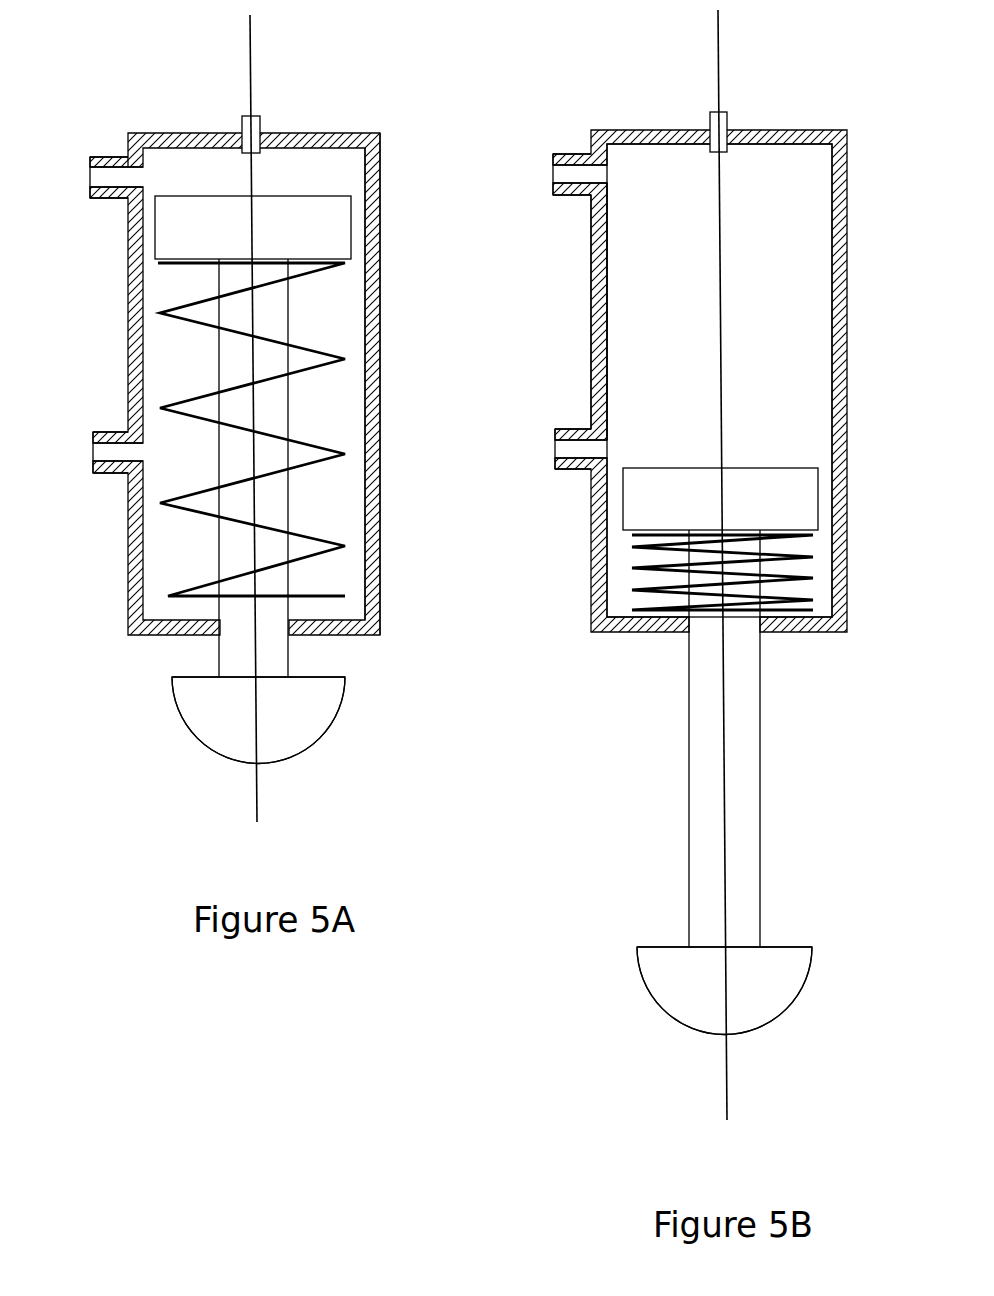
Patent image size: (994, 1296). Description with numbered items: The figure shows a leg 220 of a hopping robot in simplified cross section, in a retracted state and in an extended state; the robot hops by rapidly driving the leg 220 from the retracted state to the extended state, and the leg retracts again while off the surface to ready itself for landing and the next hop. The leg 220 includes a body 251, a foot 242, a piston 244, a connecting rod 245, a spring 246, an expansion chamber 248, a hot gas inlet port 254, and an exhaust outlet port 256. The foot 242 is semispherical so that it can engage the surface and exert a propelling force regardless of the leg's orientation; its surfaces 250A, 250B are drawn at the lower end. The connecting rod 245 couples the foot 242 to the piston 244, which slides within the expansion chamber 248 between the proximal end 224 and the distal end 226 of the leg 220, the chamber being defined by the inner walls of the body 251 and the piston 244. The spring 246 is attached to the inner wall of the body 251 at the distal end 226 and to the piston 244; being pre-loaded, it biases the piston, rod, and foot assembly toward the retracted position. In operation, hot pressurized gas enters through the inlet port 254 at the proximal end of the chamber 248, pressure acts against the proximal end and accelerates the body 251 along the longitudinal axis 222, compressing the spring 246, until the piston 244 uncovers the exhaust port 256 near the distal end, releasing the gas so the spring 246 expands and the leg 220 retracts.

In FIG. 5A, the leg 220 is at (266, 367).
In FIG. 5B, the leg 220 is at (658, 342).
In FIG. 5A, the longitudinal axis 222 is at (250, 62).
In FIG. 5B, the longitudinal axis 222 is at (718, 59).
In FIG. 5A, the proximal end 224 is at (380, 155).
In FIG. 5B, the proximal end 224 is at (608, 98).
In FIG. 5A, the distal end 226 is at (311, 536).
In FIG. 5B, the distal end 226 is at (712, 799).
In FIG. 5A, the foot 242 is at (313, 743).
In FIG. 5B, the foot 242 is at (780, 997).
In FIG. 5A, the piston 244 is at (155, 225).
In FIG. 5B, the piston 244 is at (803, 503).
In FIG. 5A, the connecting rod 245 is at (290, 409).
In FIG. 5B, the connecting rod 245 is at (692, 810).
In FIG. 5A, the spring 246 is at (345, 454).
In FIG. 5B, the spring 246 is at (633, 568).
In FIG. 5B, the expansion chamber 248 is at (706, 307).
In FIG. 5A, the curved surface of valve head 250A is at (178, 713).
In FIG. 5B, the curved surface of valve head 250A is at (643, 962).
In FIG. 5A, the flat surface of valve head 250B is at (345, 685).
In FIG. 5B, the flat surface of valve head 250B is at (813, 968).
In FIG. 5A, the body 251 is at (380, 305).
In FIG. 5B, the body 251 is at (591, 199).
In FIG. 5A, the hot gas inlet port 254 is at (90, 162).
In FIG. 5B, the hot gas inlet port 254 is at (553, 160).
In FIG. 5A, the exhaust outlet port 256 is at (93, 445).
In FIG. 5B, the exhaust outlet port 256 is at (555, 443).